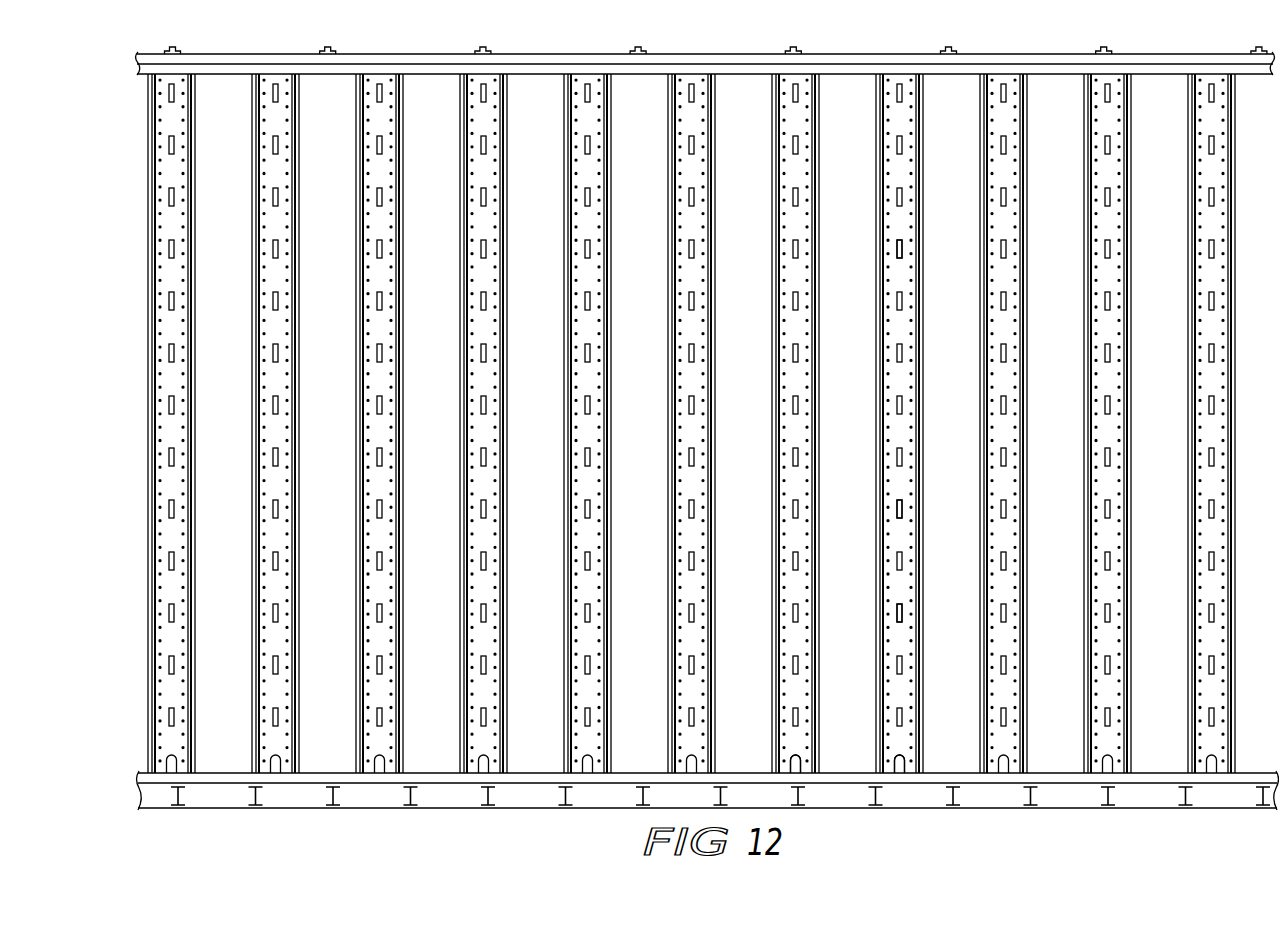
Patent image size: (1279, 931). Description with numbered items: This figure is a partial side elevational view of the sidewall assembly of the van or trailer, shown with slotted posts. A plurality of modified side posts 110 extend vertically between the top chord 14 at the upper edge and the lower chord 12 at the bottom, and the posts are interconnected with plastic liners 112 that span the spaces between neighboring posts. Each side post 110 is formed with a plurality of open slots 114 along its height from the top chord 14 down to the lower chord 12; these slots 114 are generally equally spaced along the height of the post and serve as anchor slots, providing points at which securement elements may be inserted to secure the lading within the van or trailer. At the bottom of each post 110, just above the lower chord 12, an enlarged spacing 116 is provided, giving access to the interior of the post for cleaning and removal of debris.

The lower chord 12 is at (840, 784).
The top chord 14 is at (732, 55).
The side post 110 is at (487, 322).
The plastic liner 112 is at (552, 358).
The open slot 114 is at (901, 252).
The enlarged spacing 116 is at (793, 756).